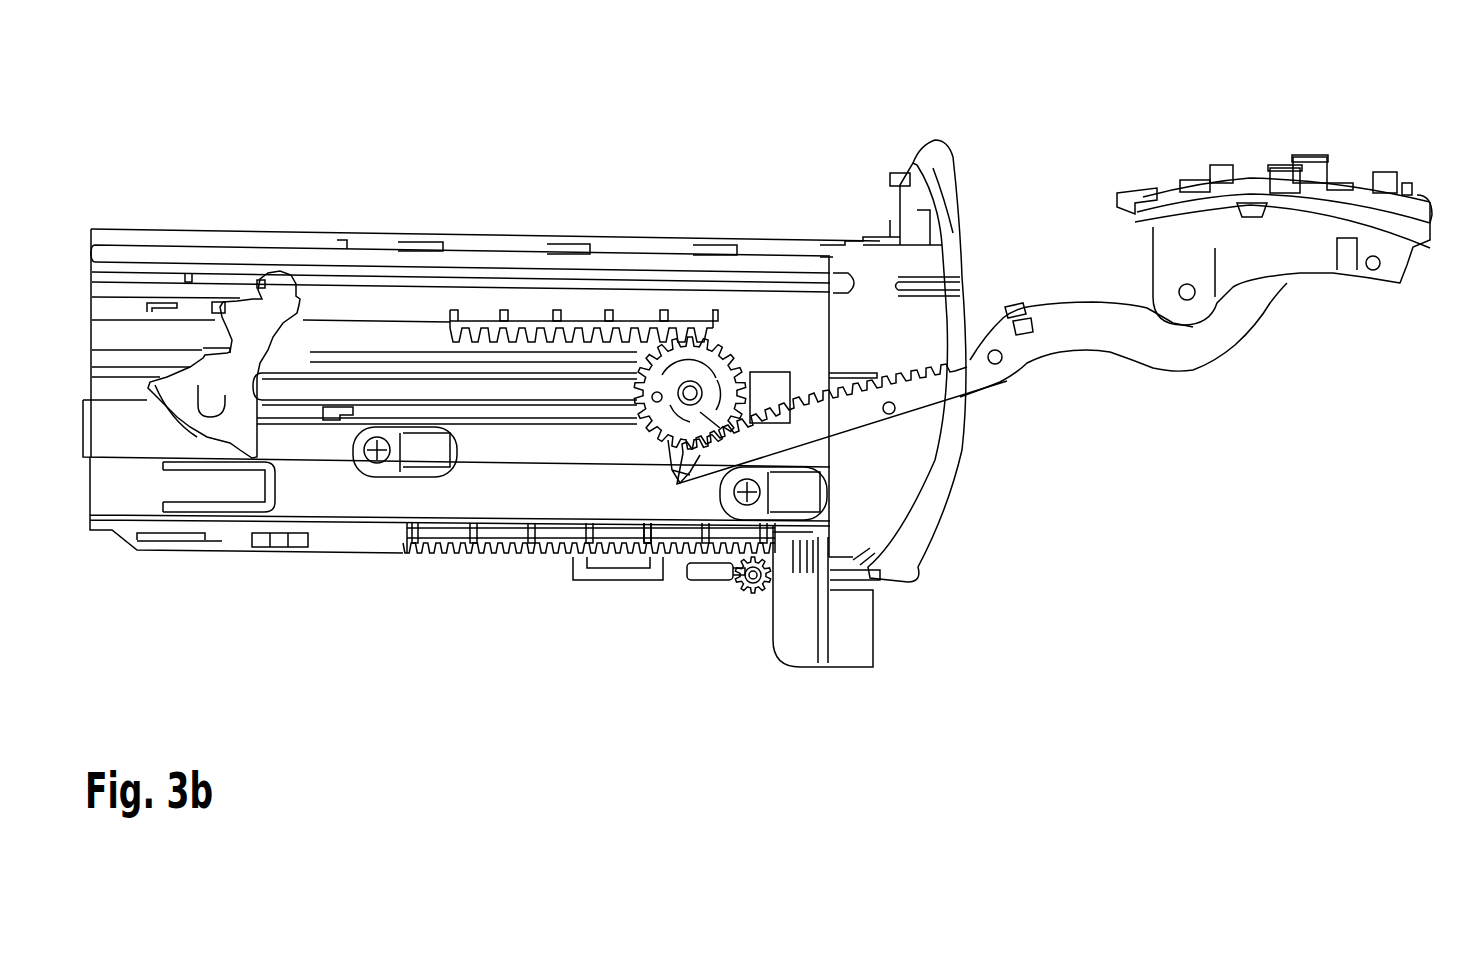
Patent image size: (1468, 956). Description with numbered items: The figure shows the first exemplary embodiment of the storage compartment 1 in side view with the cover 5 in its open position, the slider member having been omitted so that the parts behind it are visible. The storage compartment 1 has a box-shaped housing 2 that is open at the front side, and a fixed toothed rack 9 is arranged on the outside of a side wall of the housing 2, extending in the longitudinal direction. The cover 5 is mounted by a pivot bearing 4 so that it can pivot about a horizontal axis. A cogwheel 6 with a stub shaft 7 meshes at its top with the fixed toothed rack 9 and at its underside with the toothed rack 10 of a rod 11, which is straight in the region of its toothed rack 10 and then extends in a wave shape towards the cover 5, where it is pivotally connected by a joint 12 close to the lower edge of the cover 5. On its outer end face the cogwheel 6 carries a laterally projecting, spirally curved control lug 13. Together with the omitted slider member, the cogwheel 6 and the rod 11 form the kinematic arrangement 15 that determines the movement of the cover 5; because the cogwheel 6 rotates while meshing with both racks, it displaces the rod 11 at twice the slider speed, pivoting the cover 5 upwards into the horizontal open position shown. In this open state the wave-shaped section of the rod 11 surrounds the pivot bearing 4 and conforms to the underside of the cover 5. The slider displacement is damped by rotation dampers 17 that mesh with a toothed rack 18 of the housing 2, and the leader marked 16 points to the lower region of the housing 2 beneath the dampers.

The storage compartment 1 is at (764, 411).
The housing 2 is at (353, 507).
The pivot bearing 4 is at (1180, 292).
The cover 5 is at (1270, 257).
The cogwheel 6 is at (722, 345).
The stub shaft 7 is at (688, 385).
The fixed toothed rack 9 is at (546, 322).
The toothed rack 10 is at (843, 423).
The rod 11 is at (1172, 352).
The joint 12 is at (1375, 270).
The control lug 13 is at (672, 460).
The kinematic arrangement 15 is at (680, 540).
The base block 16 is at (843, 720).
The rotation damper 17 is at (748, 640).
The toothed rack 18 is at (553, 553).